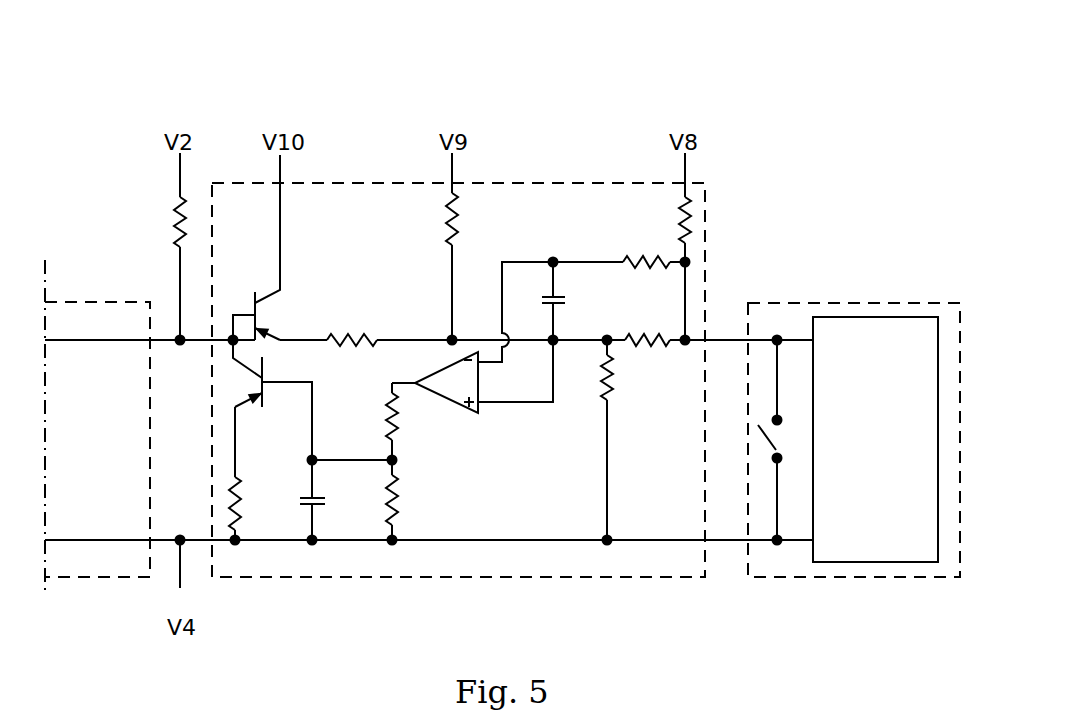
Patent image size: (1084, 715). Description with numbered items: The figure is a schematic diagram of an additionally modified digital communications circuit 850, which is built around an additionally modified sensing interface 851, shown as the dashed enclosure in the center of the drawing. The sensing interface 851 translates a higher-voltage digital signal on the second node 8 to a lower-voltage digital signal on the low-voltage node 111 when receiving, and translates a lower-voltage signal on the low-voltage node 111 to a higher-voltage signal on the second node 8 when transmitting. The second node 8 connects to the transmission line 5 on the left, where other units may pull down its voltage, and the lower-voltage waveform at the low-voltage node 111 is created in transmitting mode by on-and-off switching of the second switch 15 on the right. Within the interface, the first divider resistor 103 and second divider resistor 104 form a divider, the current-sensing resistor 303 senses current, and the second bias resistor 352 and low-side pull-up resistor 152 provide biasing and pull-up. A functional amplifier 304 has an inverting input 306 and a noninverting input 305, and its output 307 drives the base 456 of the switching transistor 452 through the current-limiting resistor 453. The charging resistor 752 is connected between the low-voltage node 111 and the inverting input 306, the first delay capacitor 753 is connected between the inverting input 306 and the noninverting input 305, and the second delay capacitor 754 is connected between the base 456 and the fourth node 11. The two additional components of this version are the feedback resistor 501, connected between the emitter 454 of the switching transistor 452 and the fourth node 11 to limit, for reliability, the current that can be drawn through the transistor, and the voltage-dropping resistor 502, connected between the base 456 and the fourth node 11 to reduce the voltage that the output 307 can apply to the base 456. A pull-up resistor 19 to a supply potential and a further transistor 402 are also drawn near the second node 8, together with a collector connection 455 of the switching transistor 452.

The transmission line 5 is at (100, 300).
The second node 8 is at (188, 345).
The fourth node 11 is at (195, 535).
The second switch 15 is at (767, 445).
The pull-up resistor 19 is at (178, 218).
The first divider resistor 103 is at (360, 335).
The second divider resistor 104 is at (612, 395).
The low-voltage node 111 is at (685, 333).
The low-side pull-up resistor 152 is at (672, 205).
The current-sensing resistor 303 is at (650, 336).
The functional amplifier 304 is at (450, 403).
The noninverting input 305 is at (483, 406).
The inverting input 306 is at (485, 362).
The output 307 is at (415, 383).
The second bias resistor 352 is at (447, 218).
The first transistor 402 is at (253, 291).
The switching transistor 452 is at (268, 384).
The current-limiting resistor 453 is at (396, 418).
The emitter 454 is at (237, 412).
The collector connection 455 is at (263, 362).
The base 456 is at (278, 382).
The feedback resistor 501 is at (238, 505).
The voltage-dropping resistor 502 is at (397, 505).
The charging resistor 752 is at (650, 257).
The first delay capacitor 753 is at (562, 297).
The second delay capacitor 754 is at (321, 497).
The additionally modified digital communications circuit 850 is at (588, 58).
The additionally modified sensing interface 851 is at (522, 183).